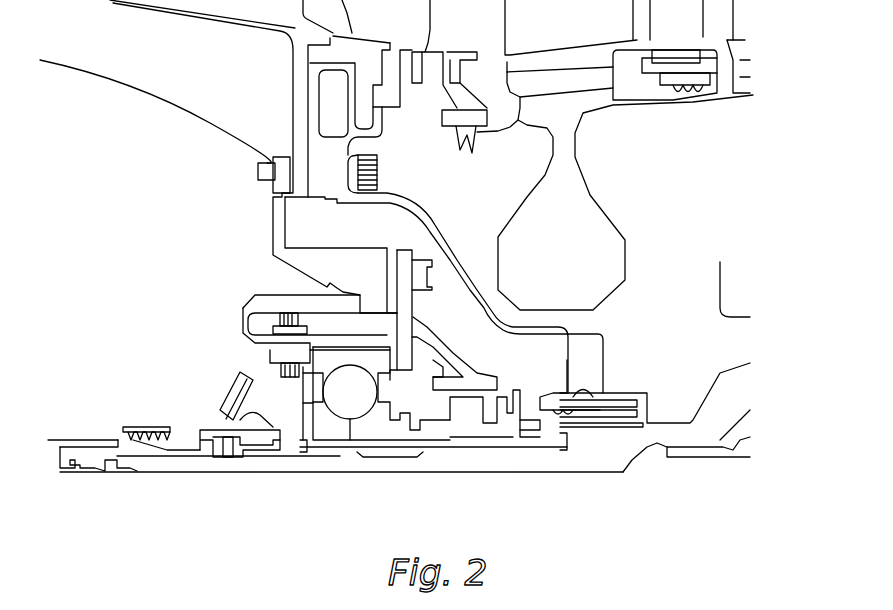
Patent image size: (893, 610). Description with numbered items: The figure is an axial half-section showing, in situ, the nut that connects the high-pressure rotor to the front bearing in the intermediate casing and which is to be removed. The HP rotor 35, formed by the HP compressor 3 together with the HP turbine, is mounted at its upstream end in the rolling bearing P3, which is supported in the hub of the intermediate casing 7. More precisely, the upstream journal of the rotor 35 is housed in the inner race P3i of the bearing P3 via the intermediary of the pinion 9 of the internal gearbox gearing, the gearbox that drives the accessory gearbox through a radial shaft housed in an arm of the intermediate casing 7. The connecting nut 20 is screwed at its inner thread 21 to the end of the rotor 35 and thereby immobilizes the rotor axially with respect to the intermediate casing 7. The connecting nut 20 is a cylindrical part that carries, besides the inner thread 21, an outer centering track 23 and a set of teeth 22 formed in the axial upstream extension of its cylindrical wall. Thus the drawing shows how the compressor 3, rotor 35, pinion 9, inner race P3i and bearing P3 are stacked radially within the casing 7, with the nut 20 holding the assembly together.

The intermediate casing 7 is at (150, 66).
The HP compressor 3 is at (602, 227).
The teeth 22 is at (87, 455).
The connecting nut 20 is at (117, 470).
The inner thread 21 is at (158, 460).
The outer centering track 23 is at (253, 415).
The pinion of the IGB gearing 9 is at (303, 430).
The inner race P3i is at (372, 428).
The rolling bearing P3 is at (402, 392).
The HP rotor 35 is at (615, 453).